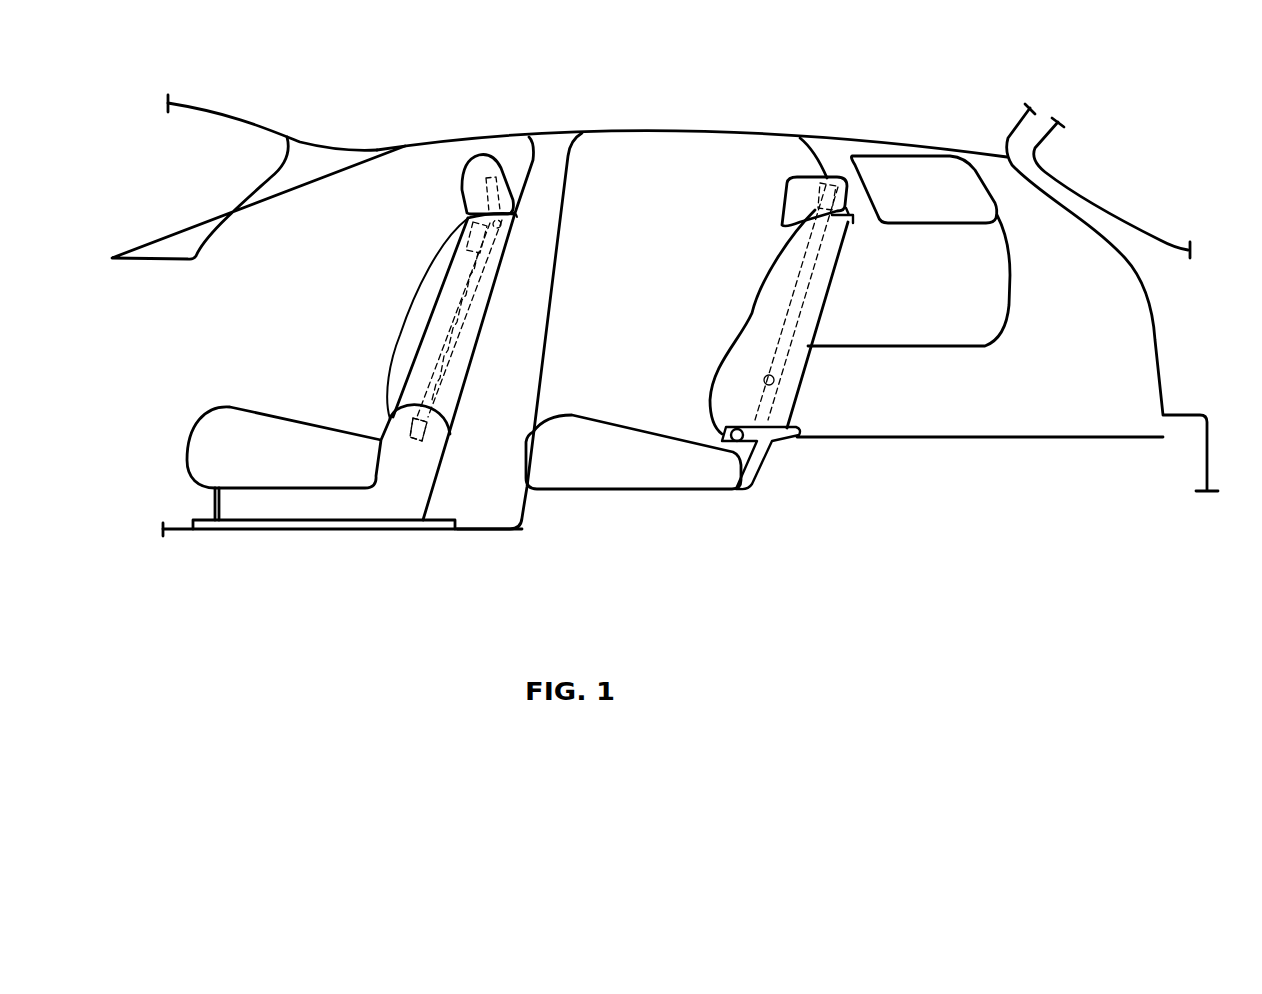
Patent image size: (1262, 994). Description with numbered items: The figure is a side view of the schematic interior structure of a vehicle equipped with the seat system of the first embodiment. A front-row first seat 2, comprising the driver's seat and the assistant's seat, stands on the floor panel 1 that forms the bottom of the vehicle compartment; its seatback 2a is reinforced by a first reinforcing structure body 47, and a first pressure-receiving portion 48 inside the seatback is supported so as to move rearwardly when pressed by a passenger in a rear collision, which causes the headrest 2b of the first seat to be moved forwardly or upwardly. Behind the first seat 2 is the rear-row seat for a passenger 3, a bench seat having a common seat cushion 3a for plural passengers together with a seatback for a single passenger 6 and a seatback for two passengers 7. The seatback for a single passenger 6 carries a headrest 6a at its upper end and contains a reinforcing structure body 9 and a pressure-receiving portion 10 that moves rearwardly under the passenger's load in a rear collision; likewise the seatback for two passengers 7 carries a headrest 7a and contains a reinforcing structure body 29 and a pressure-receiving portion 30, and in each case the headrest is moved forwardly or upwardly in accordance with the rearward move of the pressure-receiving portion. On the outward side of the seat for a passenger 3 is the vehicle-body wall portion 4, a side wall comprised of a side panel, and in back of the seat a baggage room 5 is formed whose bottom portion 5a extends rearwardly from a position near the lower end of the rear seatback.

The floor panel 1 is at (480, 528).
The first seat 2 is at (393, 322).
The seatback 2a is at (384, 381).
The headrest 2b is at (464, 192).
The seat for a passenger 3 is at (750, 282).
The seat cushion 3a is at (650, 474).
The vehicle-body wall portion 4 is at (837, 160).
The baggage room 5 is at (1076, 358).
The bottom portion 5a is at (925, 436).
The seatback for a single passenger 6 is at (749, 308).
The seatback for two passengers 7 is at (719, 359).
The headrest 6a is at (757, 196).
The headrest 7a is at (780, 199).
The reinforcing structure body 9 is at (890, 243).
The reinforcing structure body 29 is at (845, 226).
The pressure-receiving portion 10 is at (829, 389).
The pressure-receiving portion 30 is at (775, 380).
The first reinforcing structure body 47 is at (514, 216).
The first pressure-receiving portion 48 is at (423, 413).